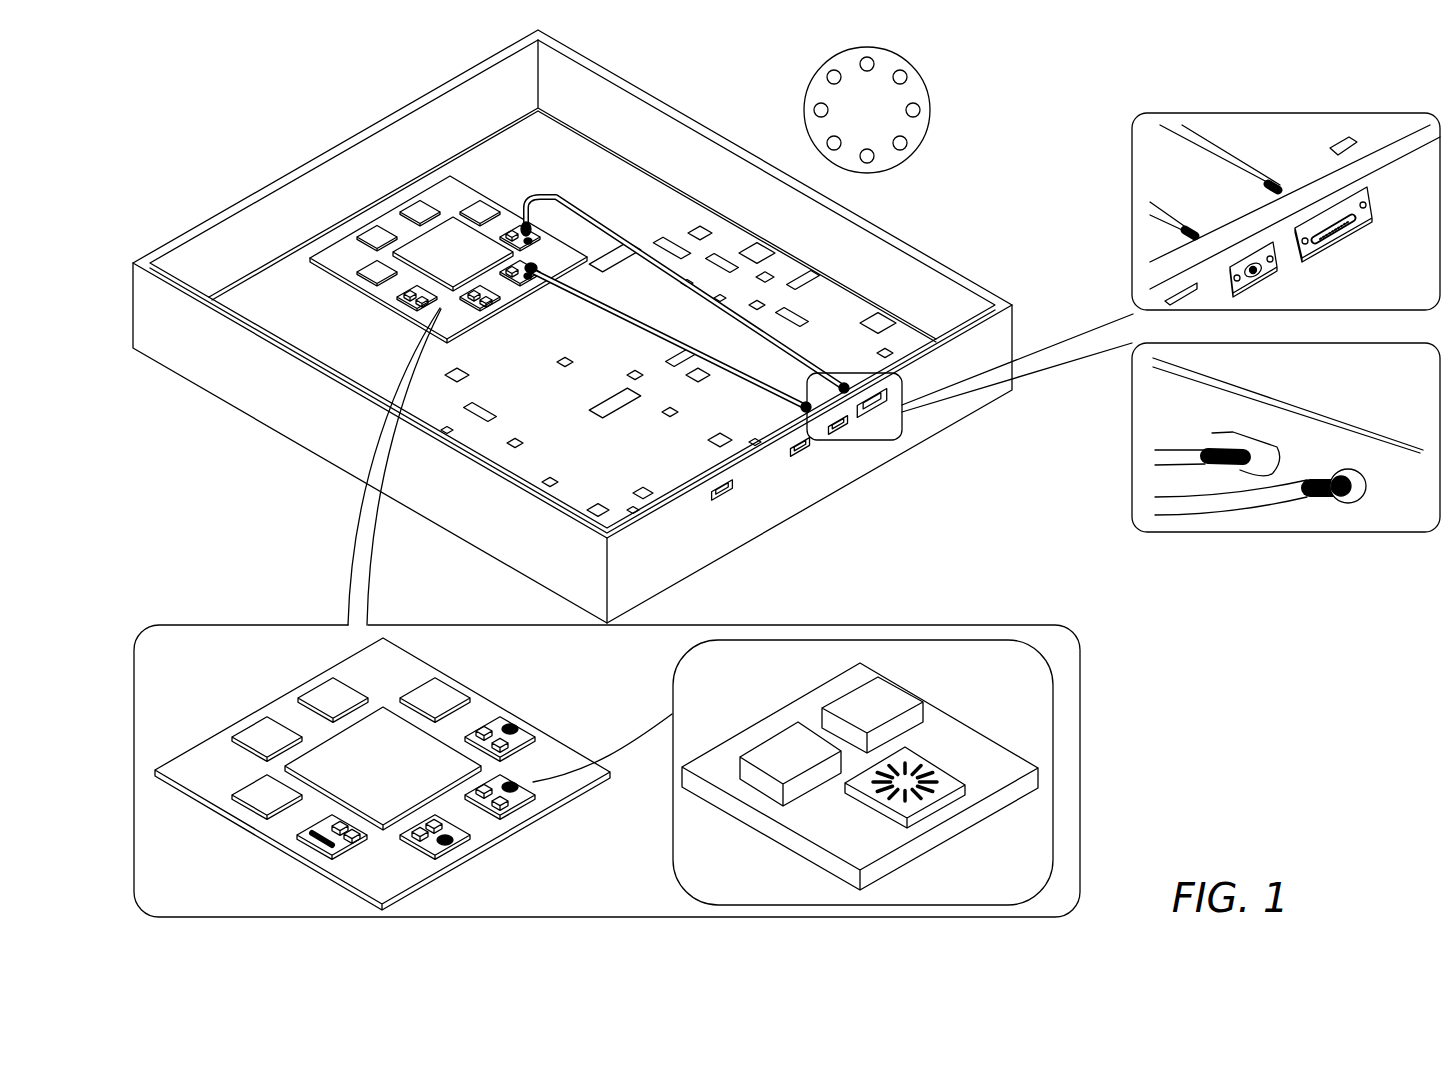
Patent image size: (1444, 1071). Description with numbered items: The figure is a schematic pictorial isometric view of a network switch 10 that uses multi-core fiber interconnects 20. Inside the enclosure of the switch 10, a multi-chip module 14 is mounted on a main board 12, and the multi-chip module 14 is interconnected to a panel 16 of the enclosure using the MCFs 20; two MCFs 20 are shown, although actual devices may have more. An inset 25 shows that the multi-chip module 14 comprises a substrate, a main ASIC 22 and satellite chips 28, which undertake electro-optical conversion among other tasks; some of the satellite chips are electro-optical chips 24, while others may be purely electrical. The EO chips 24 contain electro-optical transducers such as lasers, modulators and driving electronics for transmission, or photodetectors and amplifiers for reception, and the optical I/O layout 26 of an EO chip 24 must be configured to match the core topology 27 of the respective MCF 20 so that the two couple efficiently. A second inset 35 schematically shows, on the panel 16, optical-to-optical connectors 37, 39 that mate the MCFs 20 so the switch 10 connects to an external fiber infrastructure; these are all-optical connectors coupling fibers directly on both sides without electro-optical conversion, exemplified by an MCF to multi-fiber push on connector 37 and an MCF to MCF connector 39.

The network switch 10 is at (203, 142).
The main board 12 is at (675, 445).
The multi-chip module 14 is at (500, 177).
The panel 16 is at (790, 482).
The multi-core fiber interconnects 20 is at (636, 322).
The main ASIC 22 is at (442, 737).
The electro-optical chips 24 is at (517, 803).
The inset 25 is at (1078, 678).
The optical I/O layout 26 is at (913, 687).
The MCF core topology 27 is at (852, 125).
The satellite chips 28 is at (297, 672).
The inset 35 is at (1303, 532).
The MCF to MPO connector 37 is at (1333, 233).
The MCF to MCF connector 39 is at (1267, 268).